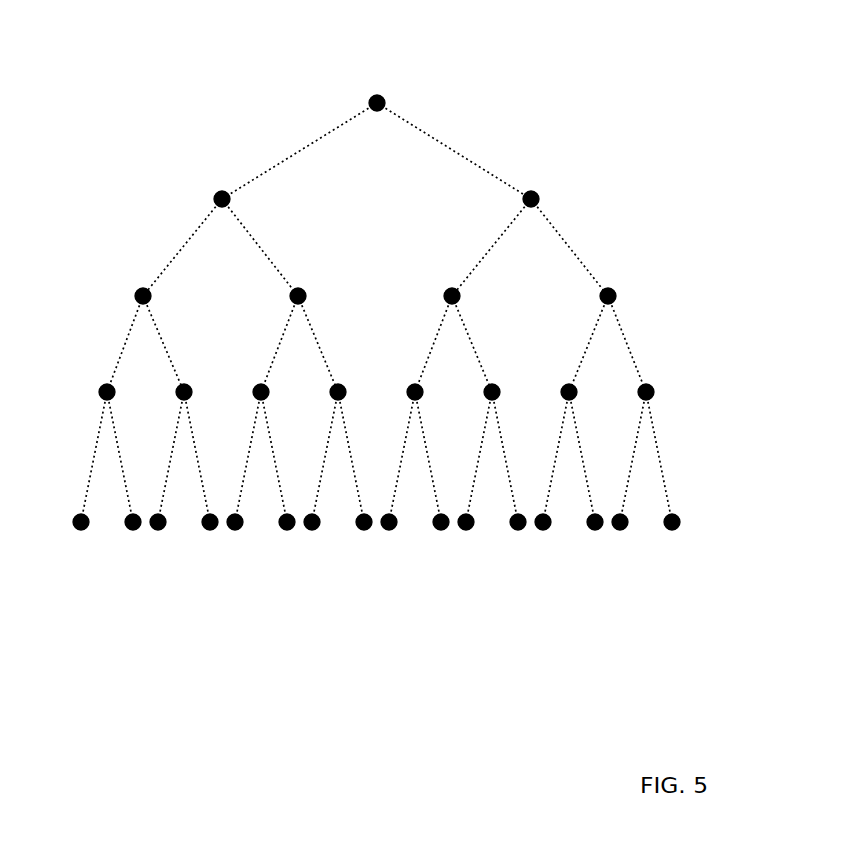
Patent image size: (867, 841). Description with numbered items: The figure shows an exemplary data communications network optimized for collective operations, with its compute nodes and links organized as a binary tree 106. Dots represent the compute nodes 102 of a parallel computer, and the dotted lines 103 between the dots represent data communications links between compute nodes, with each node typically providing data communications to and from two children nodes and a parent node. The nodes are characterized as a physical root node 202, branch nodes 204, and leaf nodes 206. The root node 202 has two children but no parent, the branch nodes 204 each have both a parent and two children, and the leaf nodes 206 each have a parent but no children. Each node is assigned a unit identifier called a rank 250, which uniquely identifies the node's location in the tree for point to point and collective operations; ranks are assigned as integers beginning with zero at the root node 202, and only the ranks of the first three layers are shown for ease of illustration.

The compute nodes 102 is at (428, 387).
The dotted lines 103 is at (307, 145).
The binary tree 106 is at (406, 391).
The physical root node 202 is at (404, 88).
The branch nodes 204 is at (692, 155).
The leaf nodes 206 is at (437, 528).
The rank 250 is at (487, 210).